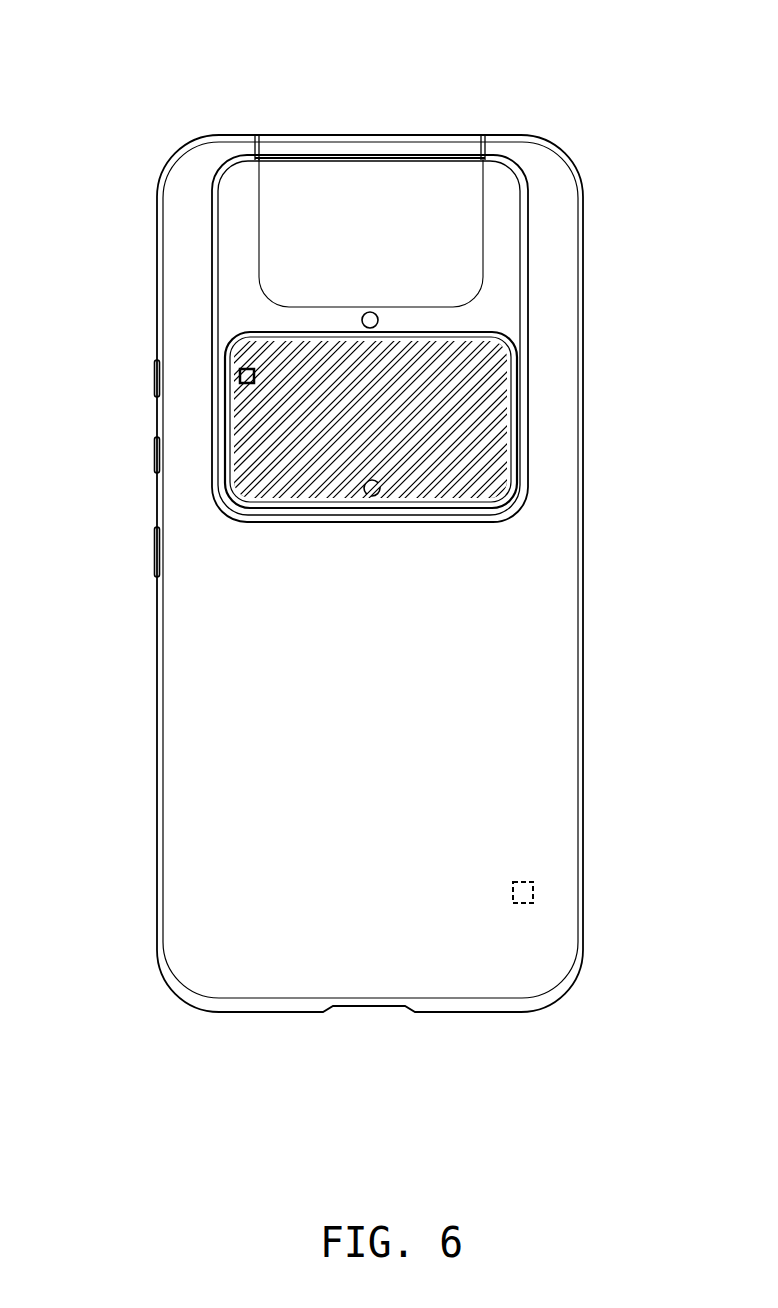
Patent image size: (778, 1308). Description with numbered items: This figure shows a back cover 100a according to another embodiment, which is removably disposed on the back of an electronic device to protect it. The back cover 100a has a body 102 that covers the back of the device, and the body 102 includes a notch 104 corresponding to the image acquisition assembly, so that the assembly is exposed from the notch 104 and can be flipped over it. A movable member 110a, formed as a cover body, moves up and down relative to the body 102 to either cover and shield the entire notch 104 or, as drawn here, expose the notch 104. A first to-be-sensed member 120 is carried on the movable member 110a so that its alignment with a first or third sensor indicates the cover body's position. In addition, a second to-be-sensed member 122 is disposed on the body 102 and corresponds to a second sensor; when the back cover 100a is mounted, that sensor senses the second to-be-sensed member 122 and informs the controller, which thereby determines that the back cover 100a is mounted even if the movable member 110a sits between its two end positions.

The back cover 100a is at (133, 72).
The body 102 is at (552, 475).
The notch 104 is at (345, 184).
The movable member 110a is at (513, 398).
The first to-be-sensed member 120 is at (240, 376).
The second to-be-sensed member 122 is at (535, 890).